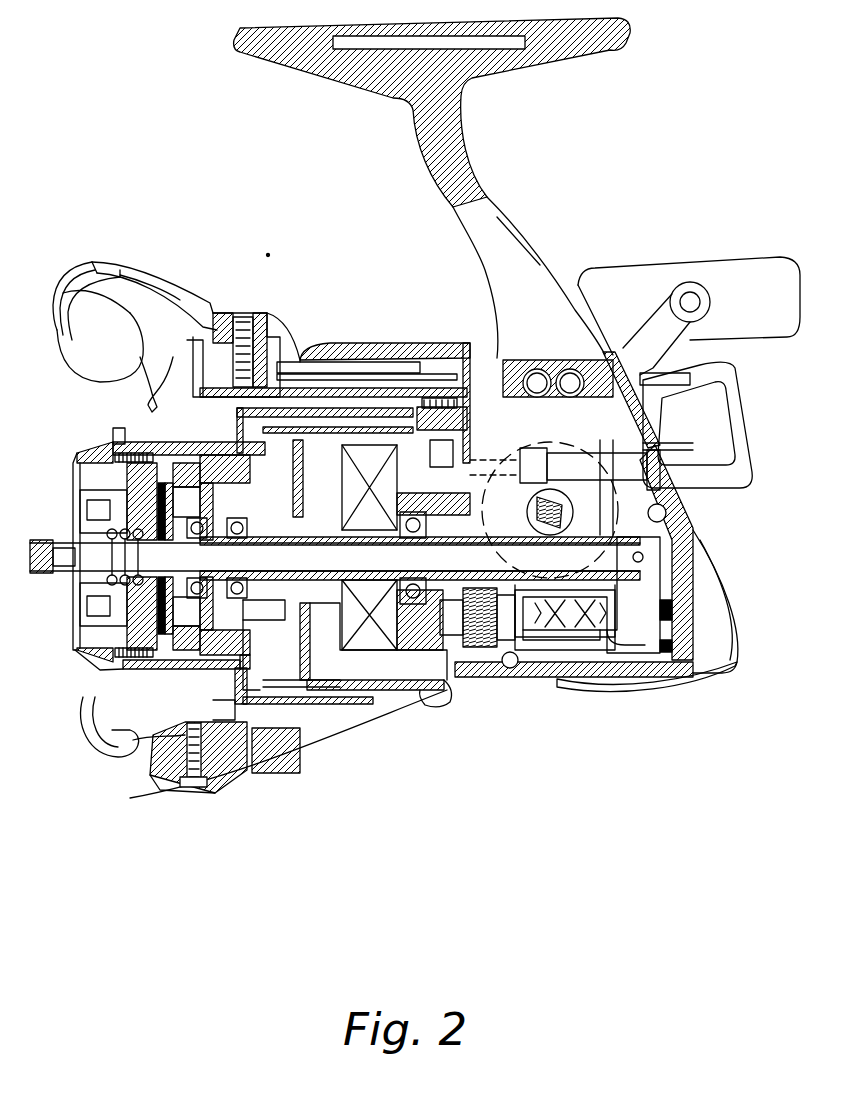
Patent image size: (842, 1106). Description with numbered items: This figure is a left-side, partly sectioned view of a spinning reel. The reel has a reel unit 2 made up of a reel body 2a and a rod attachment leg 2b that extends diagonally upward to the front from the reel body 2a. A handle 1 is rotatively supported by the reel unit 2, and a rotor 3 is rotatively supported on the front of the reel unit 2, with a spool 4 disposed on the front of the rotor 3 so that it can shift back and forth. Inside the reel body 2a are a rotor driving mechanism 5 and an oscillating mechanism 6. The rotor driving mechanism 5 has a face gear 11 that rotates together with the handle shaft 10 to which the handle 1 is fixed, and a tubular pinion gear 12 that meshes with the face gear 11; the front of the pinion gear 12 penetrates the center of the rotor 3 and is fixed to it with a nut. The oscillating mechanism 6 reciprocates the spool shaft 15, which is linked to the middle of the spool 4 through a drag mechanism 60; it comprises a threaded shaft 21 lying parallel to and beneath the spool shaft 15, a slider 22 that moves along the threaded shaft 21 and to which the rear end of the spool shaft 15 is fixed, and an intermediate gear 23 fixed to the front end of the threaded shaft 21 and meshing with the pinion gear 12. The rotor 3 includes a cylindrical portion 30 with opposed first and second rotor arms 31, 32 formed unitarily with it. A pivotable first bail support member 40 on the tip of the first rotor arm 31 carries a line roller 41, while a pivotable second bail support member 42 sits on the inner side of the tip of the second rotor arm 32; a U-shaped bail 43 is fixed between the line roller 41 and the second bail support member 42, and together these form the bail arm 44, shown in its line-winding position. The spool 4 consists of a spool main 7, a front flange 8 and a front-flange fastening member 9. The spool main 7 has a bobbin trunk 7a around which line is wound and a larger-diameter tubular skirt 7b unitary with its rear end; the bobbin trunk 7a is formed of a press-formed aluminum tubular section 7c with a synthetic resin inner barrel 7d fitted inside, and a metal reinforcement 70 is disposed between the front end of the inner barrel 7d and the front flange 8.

The handle 1 is at (660, 318).
The reel unit 2 is at (728, 562).
The reel body 2a is at (722, 512).
The rod attachment leg 2b is at (513, 220).
The rotor 3 is at (347, 698).
The spool 4 is at (210, 680).
The rotor driving mechanism 5 is at (540, 487).
The oscillating mechanism 6 is at (568, 652).
The spool main 7 is at (227, 685).
The bobbin trunk 7a is at (183, 663).
The tubular skirt 7b is at (250, 680).
The tubular section 7c is at (143, 440).
The inner barrel 7d is at (220, 478).
The front flange 8 is at (83, 700).
The front-flange fastening member 9 is at (100, 655).
The handle shaft 10 is at (583, 497).
The face gear 11 is at (597, 640).
The pinion gear 12 is at (450, 585).
The spool shaft 15 is at (633, 642).
The threaded shaft 21 is at (597, 650).
The slider 22 is at (684, 652).
The intermediate gear 23 is at (483, 645).
The cylindrical portion 30 is at (368, 682).
The first rotor arm 31 is at (283, 330).
The second rotor arm 32 is at (258, 775).
The first bail support member 40 is at (178, 300).
The line roller 41 is at (60, 305).
The second bail support member 42 is at (143, 762).
The bail 43 is at (161, 371).
The bail arm 44 is at (100, 382).
The drag mechanism 60 is at (150, 752).
The metal reinforcement 70 is at (97, 470).